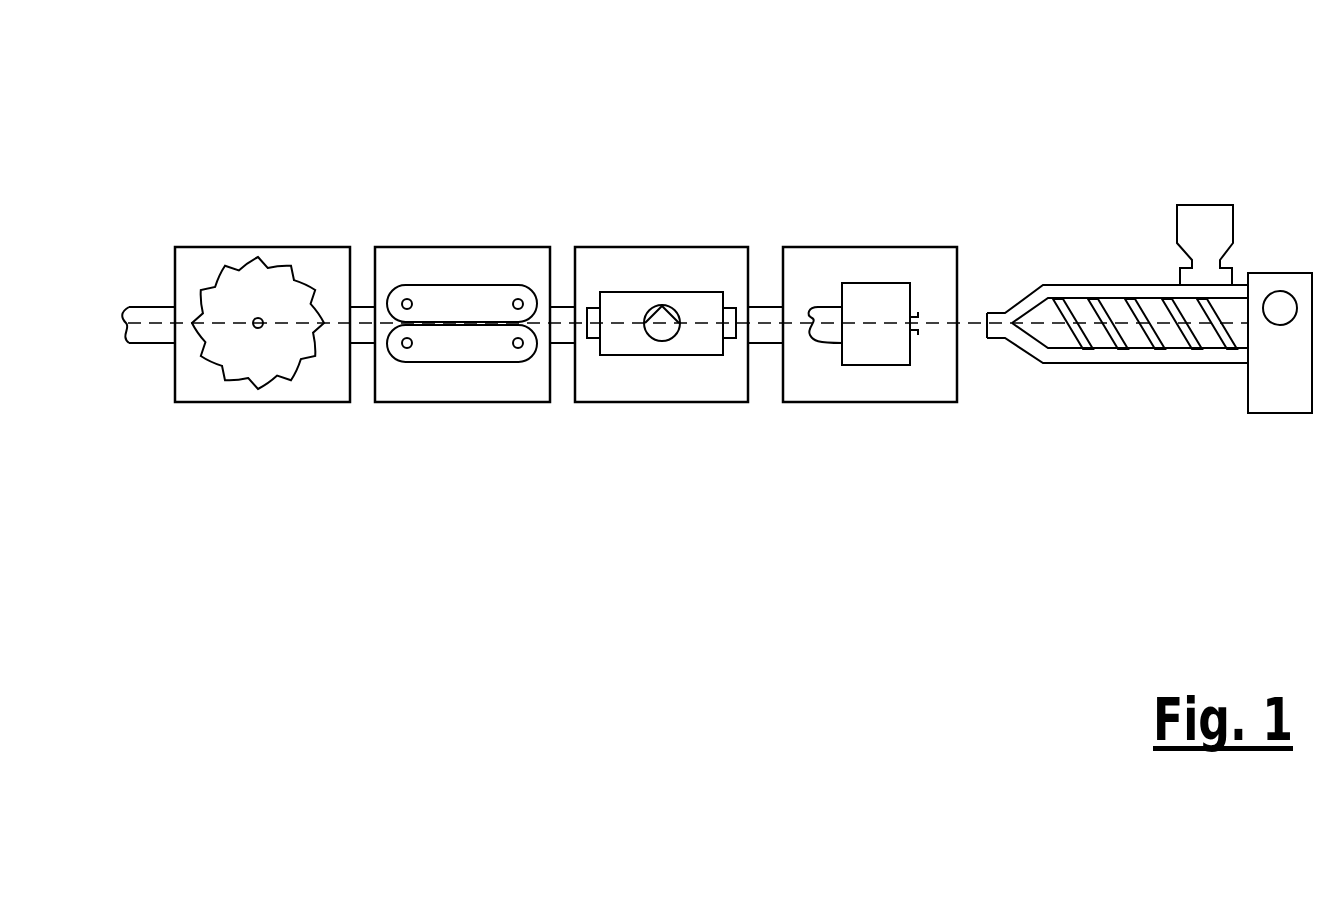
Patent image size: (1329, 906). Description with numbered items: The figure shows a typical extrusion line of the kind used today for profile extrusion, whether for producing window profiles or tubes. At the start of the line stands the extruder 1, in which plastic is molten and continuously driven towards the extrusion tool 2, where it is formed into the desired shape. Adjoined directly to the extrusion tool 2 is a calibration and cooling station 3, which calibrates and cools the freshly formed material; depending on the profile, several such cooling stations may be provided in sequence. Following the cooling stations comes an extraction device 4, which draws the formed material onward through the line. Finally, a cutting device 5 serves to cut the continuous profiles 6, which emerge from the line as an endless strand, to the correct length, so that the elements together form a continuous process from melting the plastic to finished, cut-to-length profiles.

The extruder 1 is at (1127, 310).
The extrusion tool 2 is at (890, 272).
The calibration and cooling station 3 is at (668, 270).
The extraction device 4 is at (495, 270).
The cutting device 5 is at (268, 295).
The continuous profiles 6 is at (150, 307).